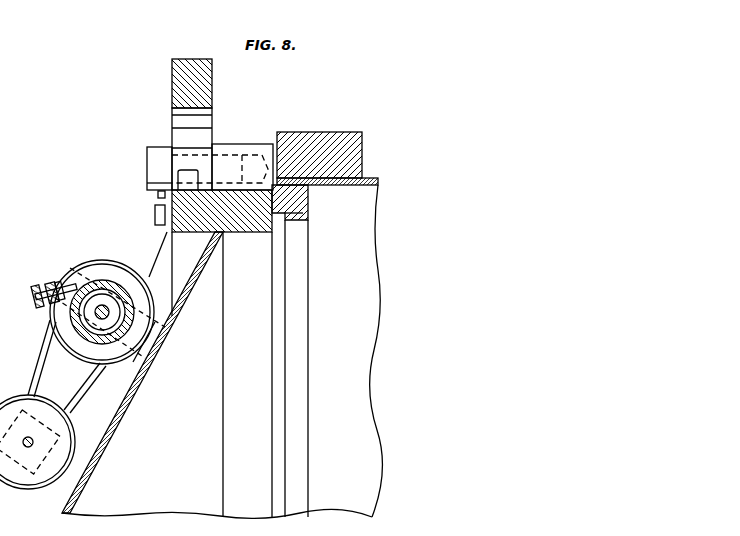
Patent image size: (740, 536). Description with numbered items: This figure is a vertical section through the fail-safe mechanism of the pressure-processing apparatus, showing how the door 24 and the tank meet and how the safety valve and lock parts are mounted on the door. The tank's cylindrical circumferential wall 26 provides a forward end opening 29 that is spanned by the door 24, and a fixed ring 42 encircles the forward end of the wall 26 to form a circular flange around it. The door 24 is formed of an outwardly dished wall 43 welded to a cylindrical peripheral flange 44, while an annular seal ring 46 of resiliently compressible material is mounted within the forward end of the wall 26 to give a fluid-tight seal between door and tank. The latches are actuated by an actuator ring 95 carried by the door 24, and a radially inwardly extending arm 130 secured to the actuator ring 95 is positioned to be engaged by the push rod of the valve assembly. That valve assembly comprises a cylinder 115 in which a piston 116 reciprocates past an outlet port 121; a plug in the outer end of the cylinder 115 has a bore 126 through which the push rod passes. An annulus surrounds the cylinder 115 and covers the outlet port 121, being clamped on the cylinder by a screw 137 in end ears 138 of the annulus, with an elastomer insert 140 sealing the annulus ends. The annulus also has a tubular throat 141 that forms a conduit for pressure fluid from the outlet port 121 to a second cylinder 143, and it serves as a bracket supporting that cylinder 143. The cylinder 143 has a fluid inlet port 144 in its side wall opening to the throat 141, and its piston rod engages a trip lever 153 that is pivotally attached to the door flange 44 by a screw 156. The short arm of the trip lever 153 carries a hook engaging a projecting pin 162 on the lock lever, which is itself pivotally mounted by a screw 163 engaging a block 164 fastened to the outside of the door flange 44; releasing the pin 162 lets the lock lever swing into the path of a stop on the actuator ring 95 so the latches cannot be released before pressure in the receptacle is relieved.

The door 24 is at (103, 452).
The cylindrical circumferential wall 26 is at (365, 180).
The forward end opening 29 is at (300, 218).
The fixed ring 42 is at (325, 136).
The outwardly dished wall 43 is at (180, 303).
The cylindrical peripheral flange 44 is at (248, 234).
The annular seal ring 46 is at (282, 212).
The actuator ring 95 is at (203, 88).
The cylinder 115 is at (80, 266).
The piston 116 is at (120, 308).
The outlet port 121 is at (88, 325).
The bore 126 is at (103, 305).
The arm 130 is at (10, 89).
The screw 137 is at (32, 298).
The end ears 138 is at (45, 272).
The elastomer insert 140 is at (62, 270).
The tubular throat 141 is at (42, 378).
The cylinder 143 is at (22, 490).
The fluid inlet port 144 is at (68, 406).
The trip lever 153 is at (162, 256).
The screw 156 is at (154, 213).
The projecting pin 162 is at (157, 195).
The screw 163 is at (153, 155).
The block 164 is at (256, 143).